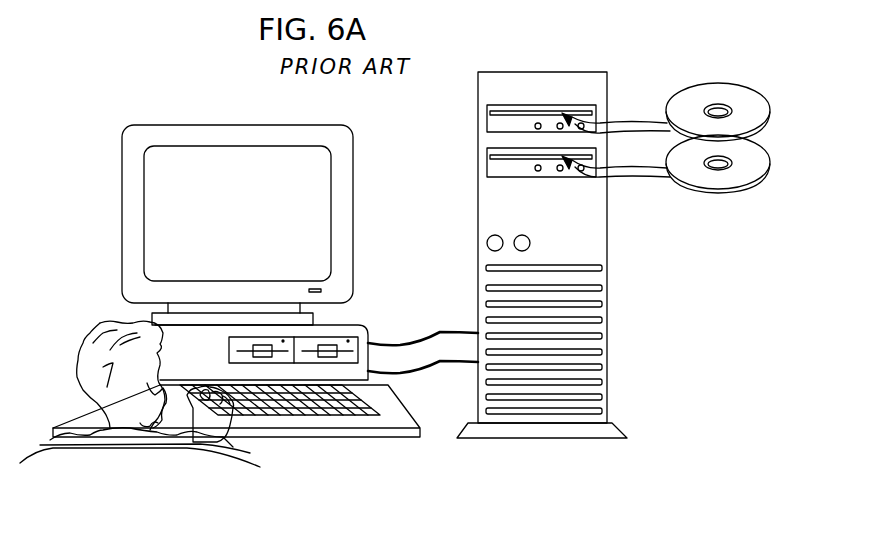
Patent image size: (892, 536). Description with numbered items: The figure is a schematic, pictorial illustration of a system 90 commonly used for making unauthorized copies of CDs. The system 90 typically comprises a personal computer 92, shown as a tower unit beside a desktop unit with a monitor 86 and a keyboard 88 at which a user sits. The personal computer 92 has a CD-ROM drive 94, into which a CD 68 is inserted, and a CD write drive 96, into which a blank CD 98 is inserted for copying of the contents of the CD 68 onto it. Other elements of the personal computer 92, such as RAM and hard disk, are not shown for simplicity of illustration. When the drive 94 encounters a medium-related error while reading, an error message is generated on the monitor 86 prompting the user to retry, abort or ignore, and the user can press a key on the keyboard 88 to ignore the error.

The system 90 is at (137, 64).
The monitor 86 is at (213, 125).
The keyboard 88 is at (370, 407).
The personal computer 92 is at (512, 72).
The CD-ROM drive 94 is at (583, 105).
The CD write drive 96 is at (510, 177).
The CD 68 is at (743, 95).
The blank CD 98 is at (757, 145).